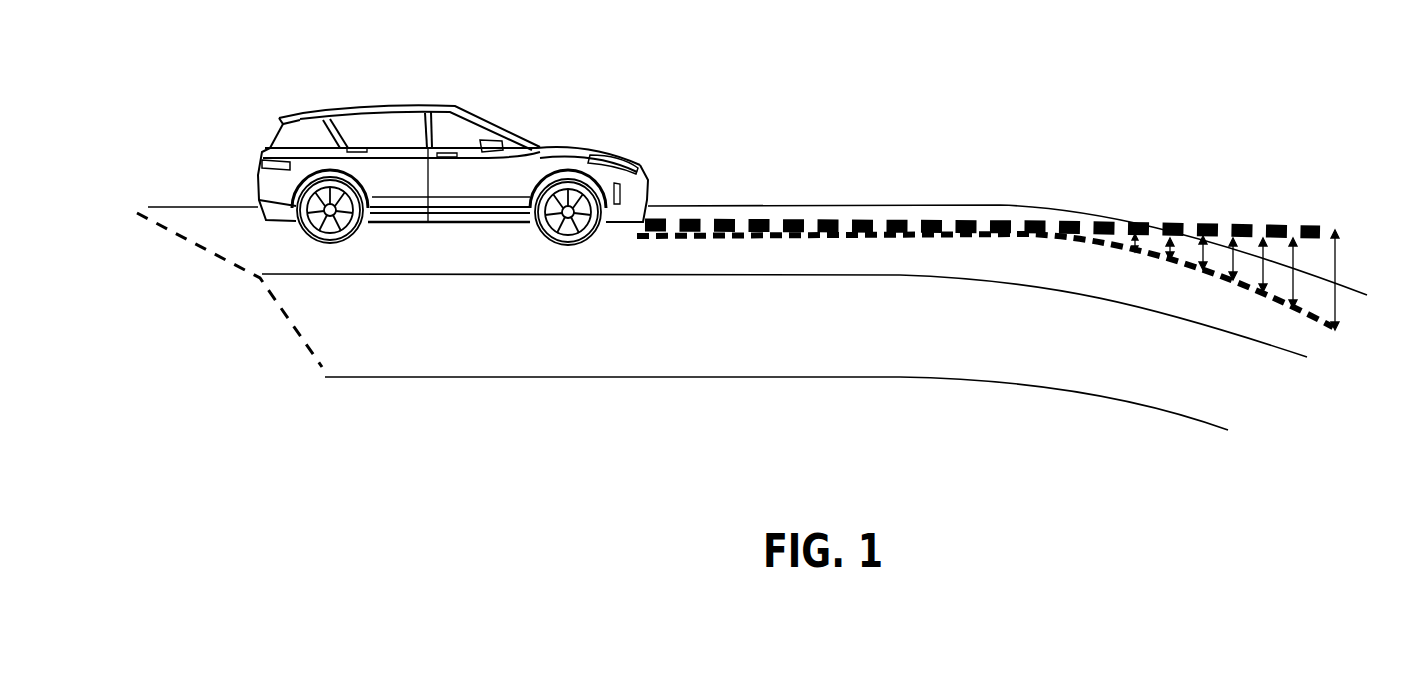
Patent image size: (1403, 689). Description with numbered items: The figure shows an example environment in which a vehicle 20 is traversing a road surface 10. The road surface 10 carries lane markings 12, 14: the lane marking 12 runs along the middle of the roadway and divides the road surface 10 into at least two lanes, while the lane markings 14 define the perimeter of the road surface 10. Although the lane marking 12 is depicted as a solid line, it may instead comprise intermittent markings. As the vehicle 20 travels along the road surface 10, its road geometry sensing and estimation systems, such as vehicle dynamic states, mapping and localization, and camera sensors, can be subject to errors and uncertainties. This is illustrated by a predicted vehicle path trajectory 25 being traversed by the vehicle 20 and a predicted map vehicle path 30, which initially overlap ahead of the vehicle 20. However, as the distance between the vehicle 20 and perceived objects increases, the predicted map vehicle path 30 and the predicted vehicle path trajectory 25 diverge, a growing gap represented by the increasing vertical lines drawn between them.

The road surface 10 is at (420, 260).
The lane marking 12 is at (790, 275).
The lane markings 14 is at (793, 203).
The vehicle 20 is at (434, 103).
The predicted vehicle path trajectory 25 is at (1313, 318).
The predicted map vehicle path 30 is at (1272, 223).